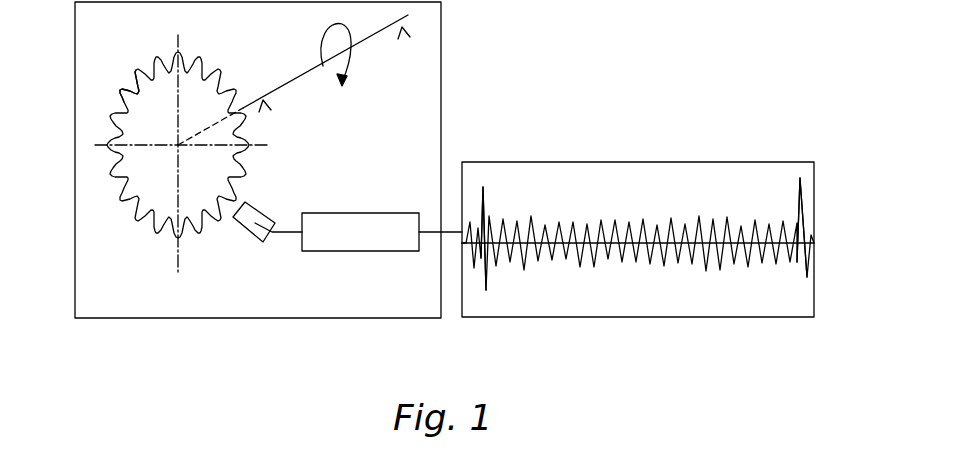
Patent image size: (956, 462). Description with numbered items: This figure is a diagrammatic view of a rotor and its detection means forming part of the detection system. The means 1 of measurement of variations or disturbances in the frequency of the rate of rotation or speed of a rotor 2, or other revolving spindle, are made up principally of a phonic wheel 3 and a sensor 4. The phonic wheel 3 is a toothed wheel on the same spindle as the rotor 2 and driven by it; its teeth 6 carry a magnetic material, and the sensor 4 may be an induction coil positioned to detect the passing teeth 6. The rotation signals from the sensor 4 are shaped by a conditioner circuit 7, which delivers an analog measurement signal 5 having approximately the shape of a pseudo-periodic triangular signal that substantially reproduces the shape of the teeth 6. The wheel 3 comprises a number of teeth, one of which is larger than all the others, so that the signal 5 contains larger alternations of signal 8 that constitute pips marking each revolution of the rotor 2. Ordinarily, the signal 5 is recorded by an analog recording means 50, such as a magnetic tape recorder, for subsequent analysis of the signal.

The means of measurement 1 is at (148, 320).
The rotor 2 is at (382, 33).
The phonic wheel 3 is at (147, 175).
The sensor 4 is at (245, 233).
The analog measurement signal 5 is at (653, 290).
The teeth 6 is at (122, 93).
The conditioner circuit 7 is at (358, 252).
The larger alternations of signal 8 is at (484, 192).
The analog recording means 50 is at (815, 293).